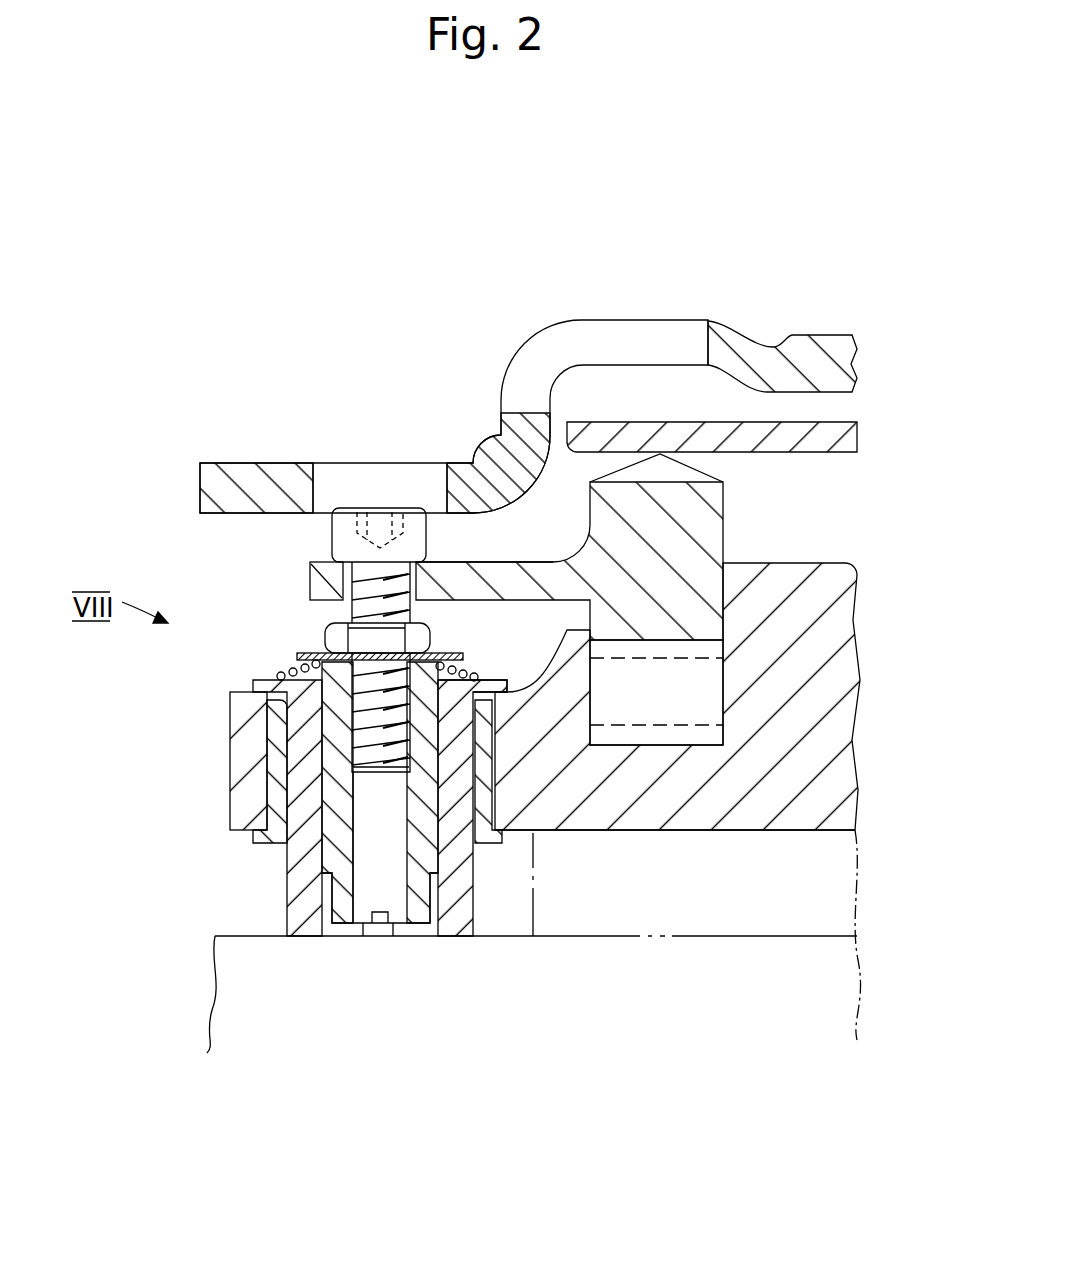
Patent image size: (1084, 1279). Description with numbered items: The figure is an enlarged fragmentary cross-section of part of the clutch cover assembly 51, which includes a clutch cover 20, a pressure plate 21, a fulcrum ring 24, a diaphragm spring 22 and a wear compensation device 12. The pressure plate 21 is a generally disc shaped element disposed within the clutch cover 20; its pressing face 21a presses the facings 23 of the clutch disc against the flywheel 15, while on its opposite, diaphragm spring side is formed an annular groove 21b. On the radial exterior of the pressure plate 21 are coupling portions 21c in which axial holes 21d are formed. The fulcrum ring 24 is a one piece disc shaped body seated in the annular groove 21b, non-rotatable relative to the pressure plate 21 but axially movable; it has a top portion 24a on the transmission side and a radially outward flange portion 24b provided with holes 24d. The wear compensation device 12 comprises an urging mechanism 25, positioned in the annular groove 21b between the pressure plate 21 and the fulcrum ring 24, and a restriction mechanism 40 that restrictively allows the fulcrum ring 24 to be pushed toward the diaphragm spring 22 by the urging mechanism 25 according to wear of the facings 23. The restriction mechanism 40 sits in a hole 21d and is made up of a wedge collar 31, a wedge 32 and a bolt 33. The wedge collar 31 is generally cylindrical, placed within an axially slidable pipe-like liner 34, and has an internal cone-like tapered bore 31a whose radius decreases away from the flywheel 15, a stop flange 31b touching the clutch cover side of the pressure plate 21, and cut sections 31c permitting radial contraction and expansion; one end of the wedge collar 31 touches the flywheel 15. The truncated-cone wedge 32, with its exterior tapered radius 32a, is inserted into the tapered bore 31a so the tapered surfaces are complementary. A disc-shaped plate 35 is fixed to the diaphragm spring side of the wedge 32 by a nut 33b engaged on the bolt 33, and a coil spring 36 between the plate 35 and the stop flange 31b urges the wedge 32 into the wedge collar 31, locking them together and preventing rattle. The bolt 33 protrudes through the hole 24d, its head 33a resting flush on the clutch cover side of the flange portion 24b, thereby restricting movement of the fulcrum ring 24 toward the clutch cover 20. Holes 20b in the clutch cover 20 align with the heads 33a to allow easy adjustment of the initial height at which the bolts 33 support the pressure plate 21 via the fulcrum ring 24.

The wear compensation device 12 is at (477, 490).
The flywheel 15 is at (857, 1042).
The clutch cover 20 is at (748, 346).
The holes 20b is at (446, 480).
The pressure plate 21 is at (818, 697).
The pressing face 21a is at (785, 834).
The annular groove 21b is at (633, 747).
The coupling portions 21c is at (230, 750).
The holes 21d is at (266, 838).
The diaphragm spring 22 is at (832, 426).
The facings 23 is at (856, 917).
The fulcrum ring 24 is at (700, 550).
The top portion 24a is at (670, 460).
The flange portion 24b is at (510, 577).
The holes 24d is at (437, 567).
The urging mechanism 25 is at (726, 672).
The wedge collar 31 is at (456, 893).
The tapered bore 31a is at (287, 936).
The stop flange 31b is at (268, 680).
The cut sections 31c is at (375, 938).
The wedge 32 is at (422, 915).
The exterior tapered radius 32a is at (322, 795).
The bolt 33 is at (330, 620).
The head 33a is at (340, 526).
The nut 33b is at (326, 641).
The liner 34 is at (487, 833).
The plate 35 is at (440, 655).
The coil spring 36 is at (494, 684).
The restriction mechanism 40 is at (242, 591).
The clutch cover assembly 51 is at (590, 290).